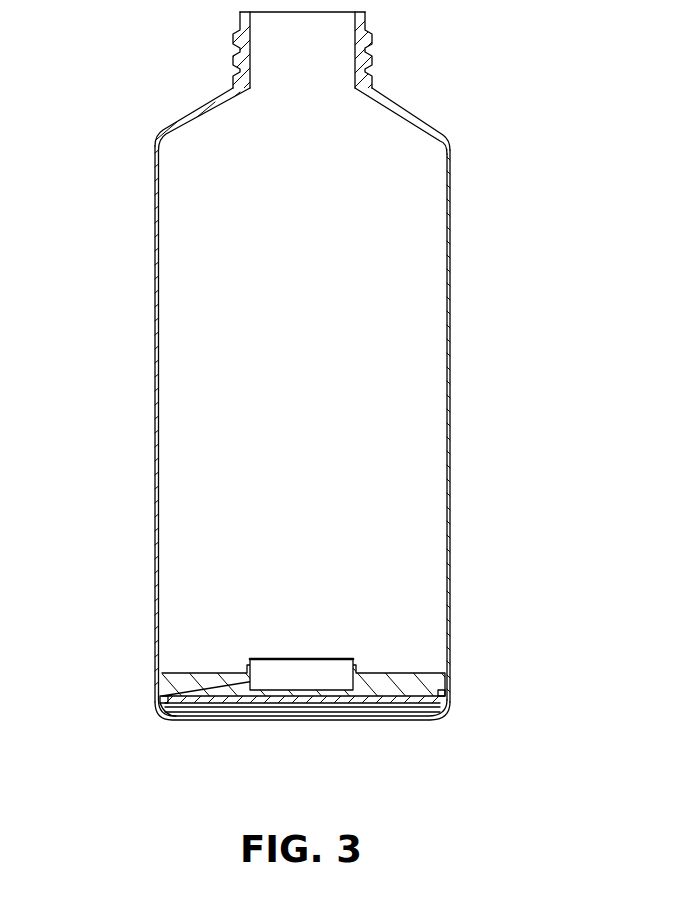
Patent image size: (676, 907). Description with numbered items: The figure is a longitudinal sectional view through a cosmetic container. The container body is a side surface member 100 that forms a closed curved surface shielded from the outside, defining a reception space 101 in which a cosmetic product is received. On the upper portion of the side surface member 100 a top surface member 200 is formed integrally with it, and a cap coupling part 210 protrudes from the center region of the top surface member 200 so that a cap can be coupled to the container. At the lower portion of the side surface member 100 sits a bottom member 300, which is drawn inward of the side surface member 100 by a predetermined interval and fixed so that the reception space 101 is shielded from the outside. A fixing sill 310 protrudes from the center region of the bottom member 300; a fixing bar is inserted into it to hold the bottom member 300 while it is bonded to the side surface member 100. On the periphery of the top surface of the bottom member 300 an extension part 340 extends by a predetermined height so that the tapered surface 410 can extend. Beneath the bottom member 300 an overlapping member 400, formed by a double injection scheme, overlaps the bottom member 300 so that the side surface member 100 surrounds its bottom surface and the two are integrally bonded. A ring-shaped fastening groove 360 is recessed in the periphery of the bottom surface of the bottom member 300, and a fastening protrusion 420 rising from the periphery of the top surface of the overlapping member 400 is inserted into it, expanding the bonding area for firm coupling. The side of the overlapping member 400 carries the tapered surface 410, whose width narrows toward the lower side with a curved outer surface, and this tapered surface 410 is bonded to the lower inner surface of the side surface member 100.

The side surface member 100 is at (450, 347).
The reception space 101 is at (371, 259).
The top surface member 200 is at (415, 110).
The cap coupling part 210 is at (371, 46).
The bottom member 300 is at (388, 682).
The fixing sill 310 is at (247, 660).
The extension part 340 is at (446, 684).
The fastening groove 360 is at (447, 704).
The overlapping member 400 is at (440, 716).
The tapered surface 410 is at (160, 720).
The fastening protrusion 420 is at (158, 700).